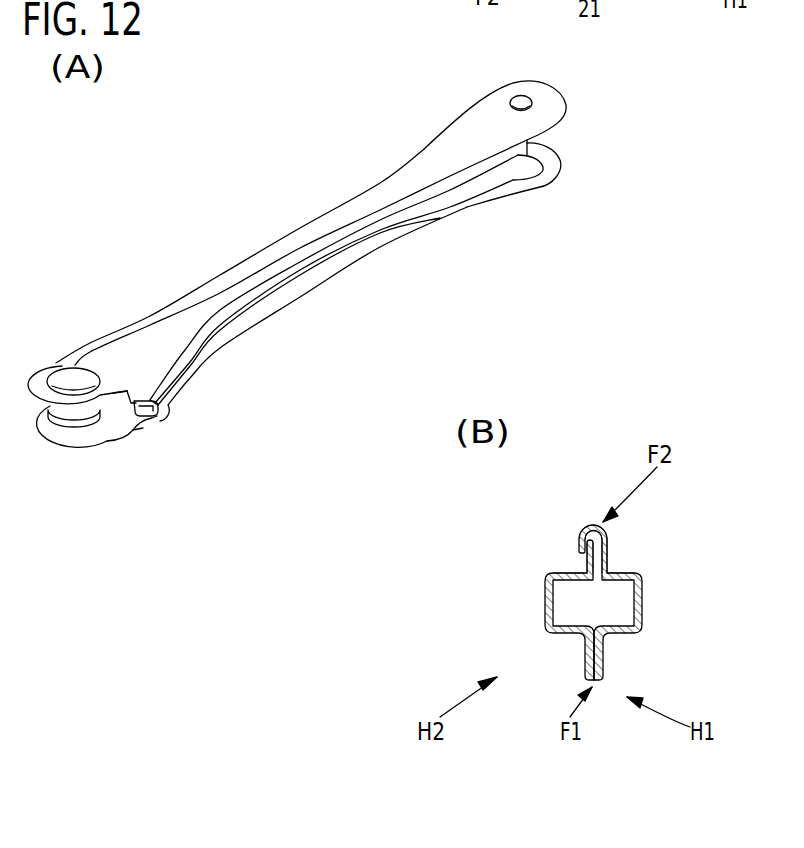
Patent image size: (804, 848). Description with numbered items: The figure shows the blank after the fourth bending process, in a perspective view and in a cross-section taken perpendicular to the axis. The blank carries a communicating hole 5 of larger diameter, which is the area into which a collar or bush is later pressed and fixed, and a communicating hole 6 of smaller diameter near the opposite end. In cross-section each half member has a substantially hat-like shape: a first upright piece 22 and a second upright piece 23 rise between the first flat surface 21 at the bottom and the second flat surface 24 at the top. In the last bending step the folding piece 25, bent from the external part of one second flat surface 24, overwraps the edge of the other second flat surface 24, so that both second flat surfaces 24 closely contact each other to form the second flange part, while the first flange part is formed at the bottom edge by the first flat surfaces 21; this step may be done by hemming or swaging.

The communicating hole 5 is at (67, 383).
The communicating hole 6 is at (526, 100).
The first flat surface 21 is at (586, 660).
The first upright piece 22 is at (570, 634).
The second upright piece 23 is at (113, 393).
The second flat surface 24 is at (150, 400).
The folding piece 25 is at (167, 395).